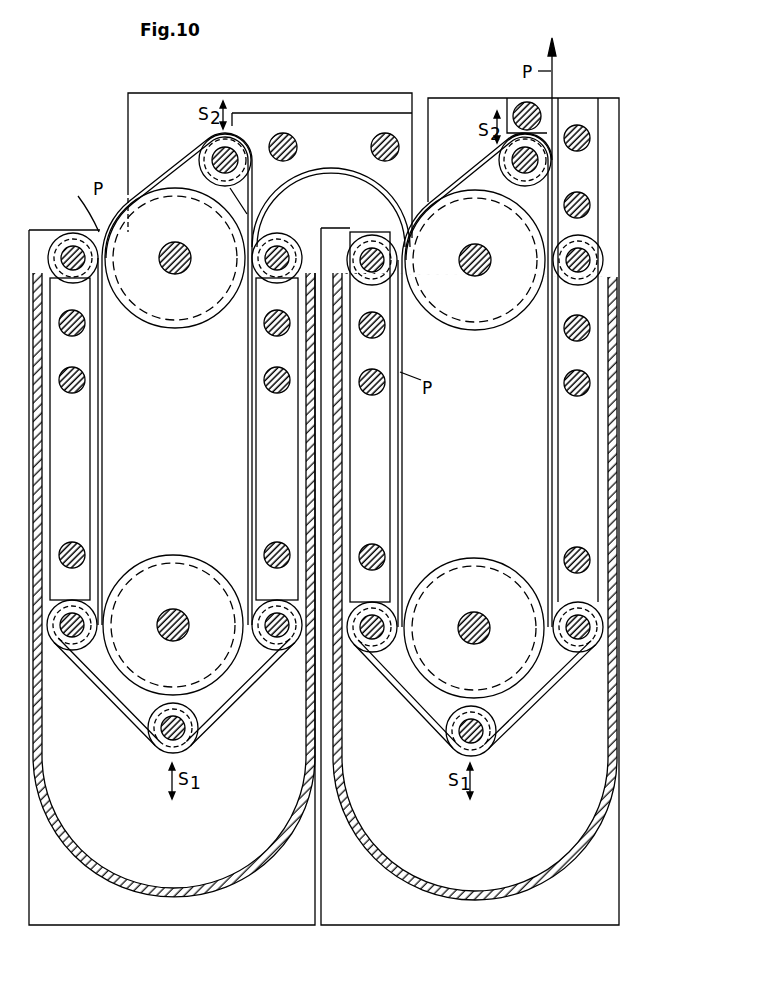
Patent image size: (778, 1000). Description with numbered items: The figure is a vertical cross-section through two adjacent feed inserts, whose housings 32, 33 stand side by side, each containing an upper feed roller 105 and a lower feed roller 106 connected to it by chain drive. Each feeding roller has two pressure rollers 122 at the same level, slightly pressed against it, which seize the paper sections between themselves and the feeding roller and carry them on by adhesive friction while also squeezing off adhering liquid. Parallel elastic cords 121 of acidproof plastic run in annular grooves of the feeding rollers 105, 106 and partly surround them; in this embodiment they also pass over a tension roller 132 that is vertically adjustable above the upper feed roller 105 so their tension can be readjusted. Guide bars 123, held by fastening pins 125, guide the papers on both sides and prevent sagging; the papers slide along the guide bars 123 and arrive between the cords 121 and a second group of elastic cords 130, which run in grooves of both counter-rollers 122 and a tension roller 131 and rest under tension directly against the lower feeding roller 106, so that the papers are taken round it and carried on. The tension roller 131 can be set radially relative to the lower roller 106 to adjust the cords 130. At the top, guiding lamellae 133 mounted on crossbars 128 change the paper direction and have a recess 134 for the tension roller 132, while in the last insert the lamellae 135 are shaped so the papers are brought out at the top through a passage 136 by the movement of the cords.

The first unit housing 32 is at (268, 908).
The second unit housing 33 is at (399, 908).
The upper feed roller 105 is at (177, 330).
The lower feed roller 106 is at (184, 537).
The cords 121 is at (176, 168).
The pressure rollers 122 is at (66, 235).
The guide bars 123 is at (86, 475).
The fastening pin 125 is at (84, 381).
The crossbars 128 is at (283, 133).
The elastic cords 130 is at (133, 698).
The tension roller 131 is at (195, 745).
The tension roller 132 is at (206, 141).
The guiding lamellae 133 is at (330, 130).
The recess 134 is at (254, 150).
The lamellae 135 is at (573, 108).
The passage 136 is at (546, 204).